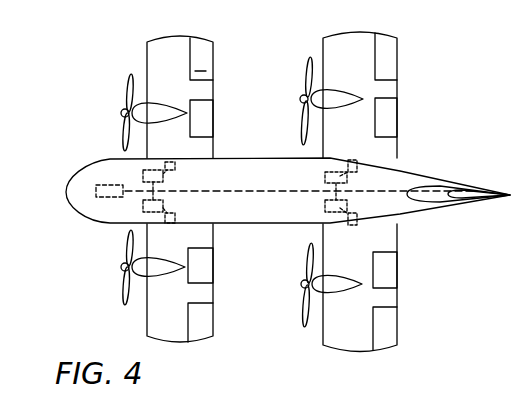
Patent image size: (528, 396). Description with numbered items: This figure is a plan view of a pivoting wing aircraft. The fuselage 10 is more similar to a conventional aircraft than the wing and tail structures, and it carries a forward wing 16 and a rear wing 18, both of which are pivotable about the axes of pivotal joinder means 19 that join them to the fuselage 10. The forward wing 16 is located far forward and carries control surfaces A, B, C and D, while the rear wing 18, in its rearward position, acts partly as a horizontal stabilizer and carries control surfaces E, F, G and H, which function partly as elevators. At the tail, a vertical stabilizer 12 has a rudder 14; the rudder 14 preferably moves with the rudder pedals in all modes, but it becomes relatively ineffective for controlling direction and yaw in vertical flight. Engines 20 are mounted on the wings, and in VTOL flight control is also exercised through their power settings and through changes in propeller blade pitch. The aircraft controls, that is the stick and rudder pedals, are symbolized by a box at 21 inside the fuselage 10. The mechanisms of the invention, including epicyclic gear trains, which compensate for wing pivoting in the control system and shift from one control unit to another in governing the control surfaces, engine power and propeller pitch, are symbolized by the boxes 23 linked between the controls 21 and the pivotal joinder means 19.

The fuselage 10 is at (266, 186).
The vertical stabilizer 12 is at (441, 186).
The rudder 14 is at (486, 189).
The forward wing 16 is at (173, 78).
The rear wing 18 is at (356, 80).
The pivotal joinder means 19 is at (169, 160).
The engines 20 is at (131, 104).
The aircraft controls 21 is at (105, 184).
The control mechanisms 23 is at (163, 176).